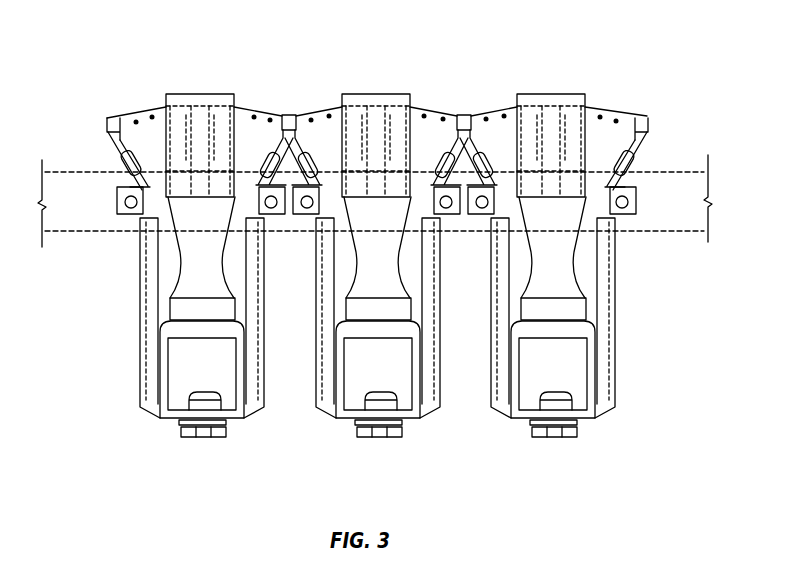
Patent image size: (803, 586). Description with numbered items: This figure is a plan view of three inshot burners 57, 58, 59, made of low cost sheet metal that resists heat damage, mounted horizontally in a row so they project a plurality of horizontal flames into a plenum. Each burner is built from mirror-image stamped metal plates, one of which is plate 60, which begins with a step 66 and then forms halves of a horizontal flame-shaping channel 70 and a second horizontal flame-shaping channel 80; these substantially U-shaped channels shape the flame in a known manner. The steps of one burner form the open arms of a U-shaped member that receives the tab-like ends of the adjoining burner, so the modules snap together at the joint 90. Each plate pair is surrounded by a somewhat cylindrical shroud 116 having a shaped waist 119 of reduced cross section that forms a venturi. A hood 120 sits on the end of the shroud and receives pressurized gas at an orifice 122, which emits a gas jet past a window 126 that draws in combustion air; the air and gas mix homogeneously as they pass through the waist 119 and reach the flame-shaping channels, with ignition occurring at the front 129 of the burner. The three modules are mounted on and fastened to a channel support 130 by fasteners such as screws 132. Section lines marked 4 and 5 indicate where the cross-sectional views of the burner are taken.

The section line 4- 4 is at (692, 8).
The section line 5- 5 is at (688, 445).
The inshot burner 57 is at (170, 282).
The inshot burner 58 is at (346, 282).
The inshot burner 59 is at (520, 282).
The stamped metal plate 60 is at (146, 114).
The step 66 is at (107, 124).
The horizontal flame-shaping channel 70 is at (177, 103).
The horizontal flame-shaping channel 80 is at (226, 100).
The snap joint 90 is at (291, 112).
The cylindrical shroud 116 is at (213, 284).
The waist 119 is at (178, 248).
The hood 120 is at (250, 406).
The orifice 122 is at (215, 392).
The window 126 is at (220, 374).
The front of the burner 129 is at (544, 83).
The channel support 130 is at (677, 232).
The screw 132 is at (130, 209).